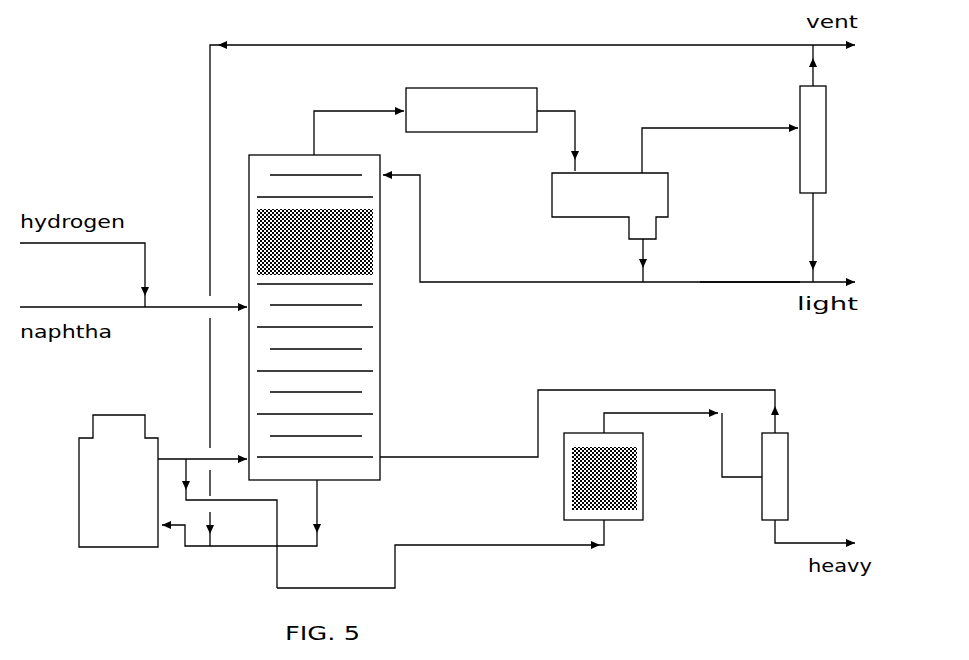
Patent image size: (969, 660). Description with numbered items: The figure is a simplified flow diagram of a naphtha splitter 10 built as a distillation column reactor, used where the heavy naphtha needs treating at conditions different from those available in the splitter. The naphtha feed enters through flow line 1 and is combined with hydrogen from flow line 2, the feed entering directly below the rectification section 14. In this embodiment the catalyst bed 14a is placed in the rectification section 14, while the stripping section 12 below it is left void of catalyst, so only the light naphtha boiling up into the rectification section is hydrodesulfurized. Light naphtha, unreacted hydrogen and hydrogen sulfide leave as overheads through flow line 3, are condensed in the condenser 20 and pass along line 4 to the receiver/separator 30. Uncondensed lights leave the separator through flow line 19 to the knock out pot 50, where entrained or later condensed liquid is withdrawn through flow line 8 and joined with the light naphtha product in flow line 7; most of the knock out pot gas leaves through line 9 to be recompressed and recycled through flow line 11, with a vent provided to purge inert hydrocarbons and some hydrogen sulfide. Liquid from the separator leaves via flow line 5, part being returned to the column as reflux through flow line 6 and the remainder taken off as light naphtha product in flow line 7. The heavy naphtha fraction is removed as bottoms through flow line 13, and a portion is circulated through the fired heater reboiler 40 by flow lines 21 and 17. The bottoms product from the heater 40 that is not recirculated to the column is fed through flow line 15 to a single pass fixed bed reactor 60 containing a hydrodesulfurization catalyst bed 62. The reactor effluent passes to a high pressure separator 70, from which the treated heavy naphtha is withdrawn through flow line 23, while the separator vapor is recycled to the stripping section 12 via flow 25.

The flow line 1 is at (60, 307).
The flow line 2 is at (55, 243).
The flow line 3 is at (345, 107).
The condensed overhead line 4 is at (573, 112).
The flow line 5 is at (636, 262).
The flow line 6 is at (540, 284).
The flow line 7 is at (750, 284).
The flow line 8 is at (812, 237).
The vent gas line 9 is at (827, 55).
The naphtha splitter 10 is at (314, 301).
The flow line 11 is at (582, 35).
The stripping section 12 is at (356, 388).
The flow line 13 is at (322, 508).
The rectification section 14 is at (288, 163).
The catalyst bed 14a is at (368, 243).
The flow line 15 is at (520, 546).
The flow line 17 is at (190, 458).
The flow line 19 is at (724, 124).
The condenser 20 is at (483, 122).
The flow line 21 is at (258, 548).
The flow line 23 is at (797, 541).
The flow 25 is at (778, 396).
The receiver/separator 30 is at (609, 207).
The fired heater reboiler 40 is at (124, 539).
The knock out pot 50 is at (808, 145).
The single pass fixed bed reactor 60 is at (564, 480).
The hydrodesulfurization catalyst bed 62 is at (620, 488).
The high pressure separator 70 is at (768, 488).